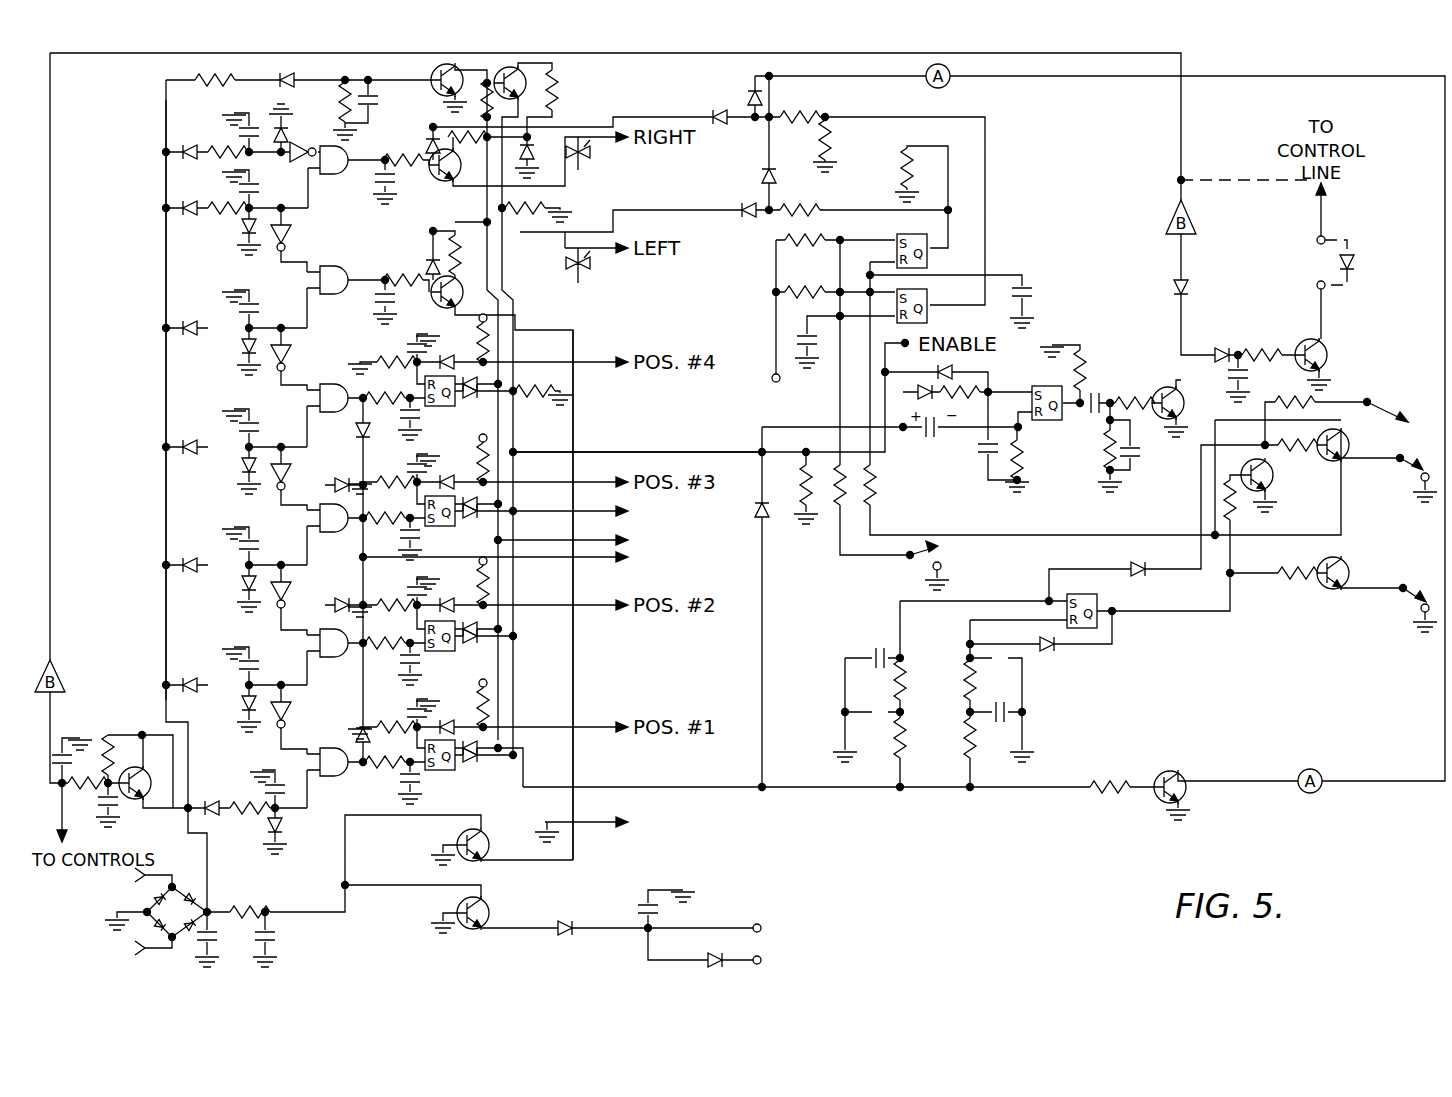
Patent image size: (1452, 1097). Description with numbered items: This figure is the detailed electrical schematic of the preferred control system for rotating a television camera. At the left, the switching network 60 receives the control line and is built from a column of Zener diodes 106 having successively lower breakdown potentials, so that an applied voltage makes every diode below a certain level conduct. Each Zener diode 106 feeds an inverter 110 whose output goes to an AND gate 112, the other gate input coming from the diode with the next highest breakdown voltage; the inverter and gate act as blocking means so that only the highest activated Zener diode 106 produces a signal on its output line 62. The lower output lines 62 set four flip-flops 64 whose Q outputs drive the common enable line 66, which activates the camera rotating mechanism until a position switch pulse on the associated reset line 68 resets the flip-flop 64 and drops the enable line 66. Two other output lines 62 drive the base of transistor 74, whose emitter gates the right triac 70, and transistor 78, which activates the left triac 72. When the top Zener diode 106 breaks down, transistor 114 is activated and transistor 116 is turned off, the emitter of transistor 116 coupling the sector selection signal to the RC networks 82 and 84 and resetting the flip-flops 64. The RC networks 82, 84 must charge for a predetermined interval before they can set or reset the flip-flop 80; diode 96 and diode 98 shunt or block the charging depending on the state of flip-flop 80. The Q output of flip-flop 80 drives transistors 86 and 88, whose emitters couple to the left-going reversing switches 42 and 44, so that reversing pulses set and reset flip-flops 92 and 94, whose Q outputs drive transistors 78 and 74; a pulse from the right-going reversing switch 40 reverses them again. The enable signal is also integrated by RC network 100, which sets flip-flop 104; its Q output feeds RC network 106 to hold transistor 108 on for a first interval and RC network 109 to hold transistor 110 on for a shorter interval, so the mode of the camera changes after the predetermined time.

The right-going reversing switch 40 is at (905, 561).
The first left-going reversing switch 42 is at (1410, 472).
The second left-going reversing switch 44 is at (1412, 600).
The switching network 60 is at (148, 352).
The output lines 62 is at (356, 777).
The flip-flops 64 is at (456, 406).
The enable line 66 is at (750, 452).
The reset line 68 is at (588, 480).
The right triac 70 is at (590, 153).
The left triac 72 is at (590, 265).
The transistor 74 is at (447, 182).
The transistor 78 is at (462, 285).
The flip-flop 80 is at (1099, 600).
The RC network 82 is at (868, 656).
The RC network 84 is at (1025, 692).
The transistor 86 is at (1326, 590).
The transistor 88 is at (1272, 470).
The flip-flop 92 is at (938, 303).
The flip-flop 94 is at (893, 235).
The first diode 96 is at (1048, 652).
The diode 98 is at (1138, 562).
The RC network 100 is at (975, 437).
The flip-flop 104 is at (1054, 422).
The Zener diodes 106 is at (283, 88).
The transistor 108 is at (1325, 345).
The RC network 109 is at (1132, 460).
The inverter 110 is at (300, 163).
The AND gate 112 is at (334, 175).
The transistor 114 is at (430, 90).
The transistor 116 is at (520, 68).